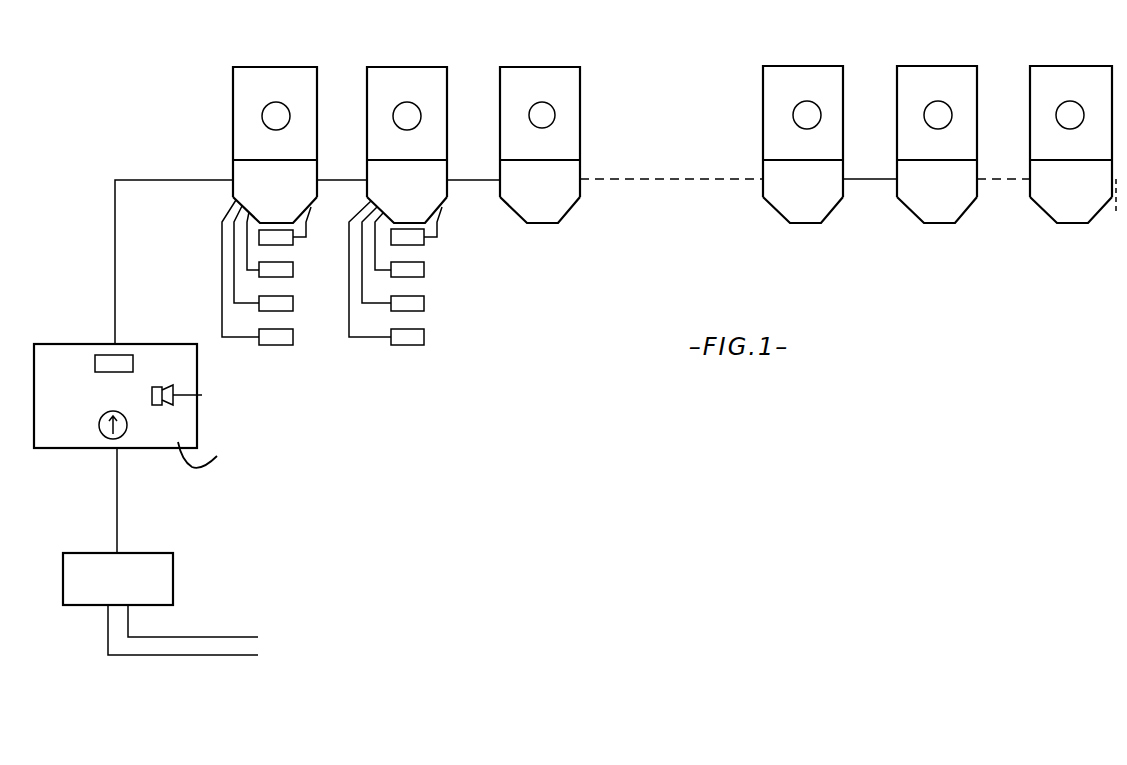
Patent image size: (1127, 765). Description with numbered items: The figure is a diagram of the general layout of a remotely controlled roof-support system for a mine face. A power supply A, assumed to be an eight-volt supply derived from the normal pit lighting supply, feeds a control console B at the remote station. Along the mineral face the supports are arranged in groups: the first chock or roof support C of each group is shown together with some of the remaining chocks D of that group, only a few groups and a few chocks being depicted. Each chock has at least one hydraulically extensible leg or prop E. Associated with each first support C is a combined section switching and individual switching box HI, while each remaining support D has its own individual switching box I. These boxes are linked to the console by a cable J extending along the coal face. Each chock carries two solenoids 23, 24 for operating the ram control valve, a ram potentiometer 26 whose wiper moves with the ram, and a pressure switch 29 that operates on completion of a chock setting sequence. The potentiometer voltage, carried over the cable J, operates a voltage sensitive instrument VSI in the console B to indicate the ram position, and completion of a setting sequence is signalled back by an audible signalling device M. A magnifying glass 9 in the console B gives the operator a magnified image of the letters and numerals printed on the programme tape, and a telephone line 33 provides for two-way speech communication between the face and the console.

The first chock or roof support C is at (251, 82).
The remaining chocks D is at (412, 82).
The hydraulically extensible leg or prop E is at (270, 110).
The section switching and individual switching box HI is at (250, 178).
The individual switching box I is at (438, 198).
The cable J is at (150, 182).
The ram potentiometer 26 is at (272, 236).
The pressure switch 29 is at (272, 270).
The solenoid 23 is at (280, 302).
The solenoid 24 is at (278, 337).
The control console B is at (183, 432).
The magnifying glass 9 is at (124, 362).
The audible signalling device M is at (188, 395).
The voltage sensitive instrument VSI is at (99, 425).
The telephone line 33 is at (186, 467).
The power supply A is at (99, 592).